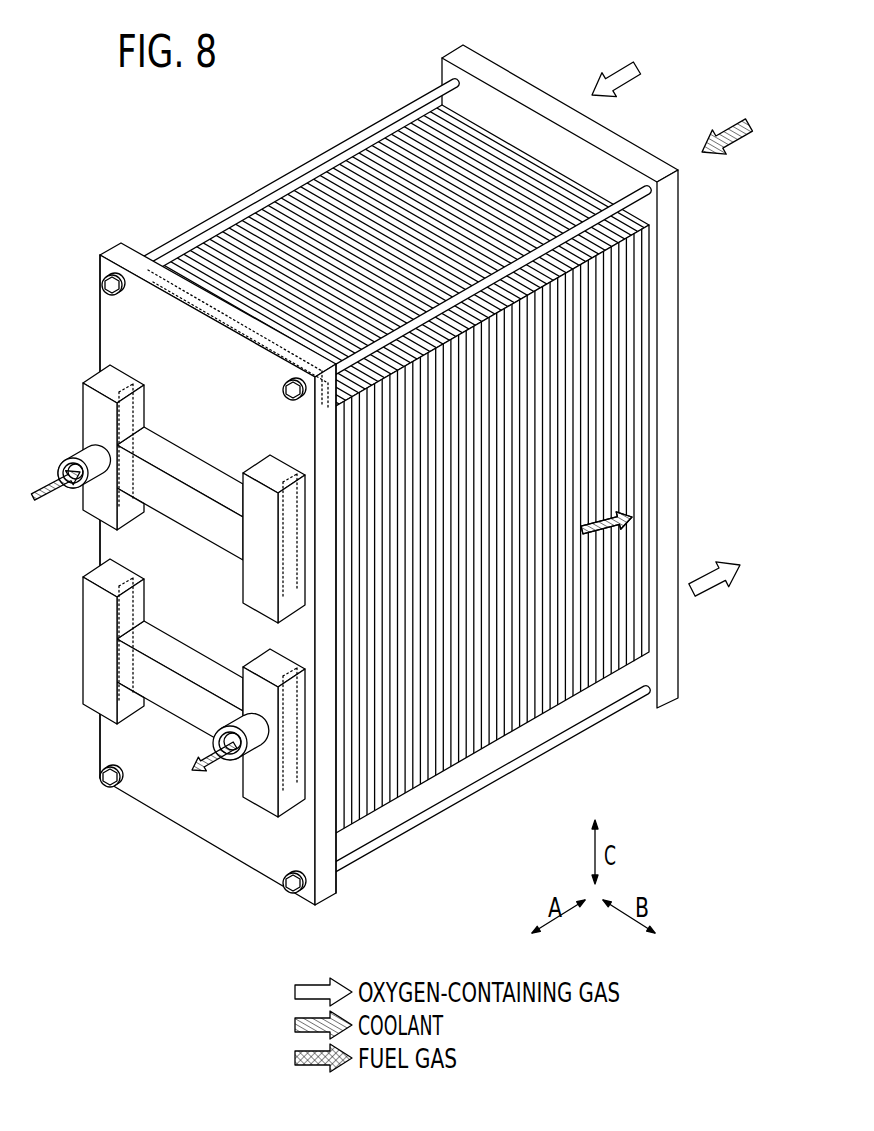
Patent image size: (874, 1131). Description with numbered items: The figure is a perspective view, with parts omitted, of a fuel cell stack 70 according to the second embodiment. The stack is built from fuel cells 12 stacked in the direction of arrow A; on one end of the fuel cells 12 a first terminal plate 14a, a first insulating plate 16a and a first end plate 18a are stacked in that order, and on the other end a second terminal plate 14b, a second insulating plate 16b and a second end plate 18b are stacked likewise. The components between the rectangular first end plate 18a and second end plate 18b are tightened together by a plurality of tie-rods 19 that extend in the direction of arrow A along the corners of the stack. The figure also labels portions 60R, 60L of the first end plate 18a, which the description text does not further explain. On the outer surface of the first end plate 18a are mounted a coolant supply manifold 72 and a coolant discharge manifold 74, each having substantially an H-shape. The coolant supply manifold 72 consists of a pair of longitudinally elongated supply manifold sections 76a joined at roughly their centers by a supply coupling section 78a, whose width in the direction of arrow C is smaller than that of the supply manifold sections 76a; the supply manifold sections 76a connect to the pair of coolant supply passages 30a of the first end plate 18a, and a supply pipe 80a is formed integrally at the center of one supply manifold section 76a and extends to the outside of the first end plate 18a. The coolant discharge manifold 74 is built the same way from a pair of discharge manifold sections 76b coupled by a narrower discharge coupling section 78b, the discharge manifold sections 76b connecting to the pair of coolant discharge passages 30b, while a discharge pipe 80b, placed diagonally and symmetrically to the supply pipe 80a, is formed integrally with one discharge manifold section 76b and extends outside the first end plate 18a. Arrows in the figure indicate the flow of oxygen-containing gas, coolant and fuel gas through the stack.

The fuel cell stack 70 is at (231, 116).
The fuel cells 12 is at (277, 203).
The first terminal plate 14a is at (177, 280).
The second terminal plate 14b is at (639, 311).
The first insulating plate 16a is at (148, 270).
The second insulating plate 16b is at (647, 286).
The first end plate 18a is at (107, 247).
The second end plate 18b is at (534, 100).
The tie-rods 19 is at (370, 133).
The coolant supply passages 30a is at (100, 413).
The coolant discharge passages 30b is at (100, 604).
The side portion of end plate 60R is at (98, 747).
The side portion of end plate 60L is at (330, 883).
The coolant supply manifold 72 is at (164, 485).
The coolant discharge manifold 74 is at (164, 678).
The supply manifold sections 76a is at (95, 425).
The discharge manifold sections 76b is at (93, 677).
The supply coupling section 78a is at (182, 473).
The discharge coupling section 78b is at (182, 667).
The supply pipe 80a is at (93, 505).
The discharge pipe 80b is at (217, 742).